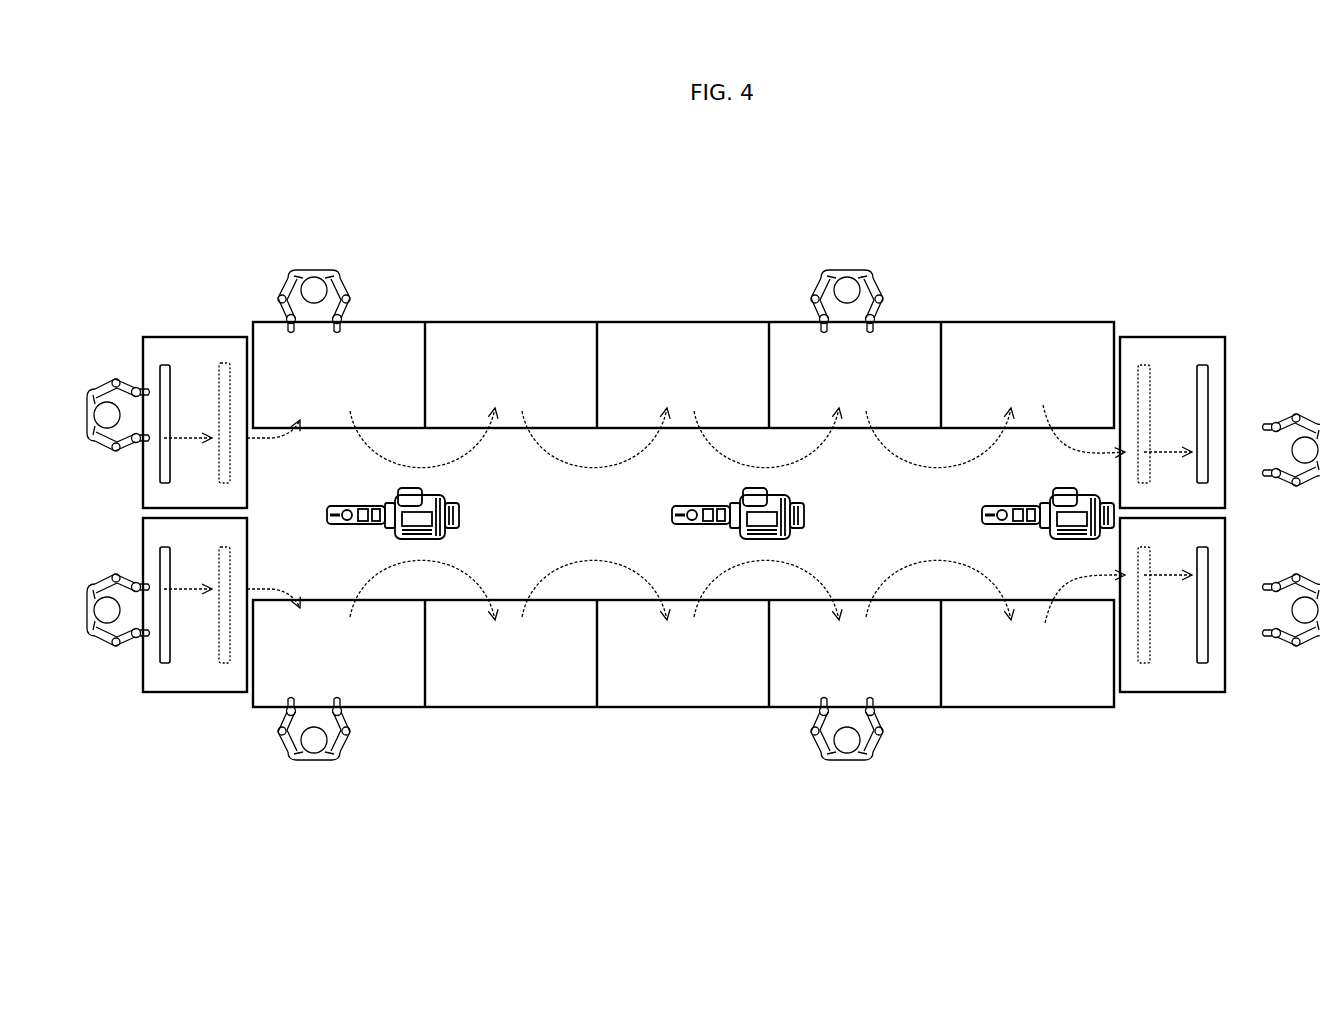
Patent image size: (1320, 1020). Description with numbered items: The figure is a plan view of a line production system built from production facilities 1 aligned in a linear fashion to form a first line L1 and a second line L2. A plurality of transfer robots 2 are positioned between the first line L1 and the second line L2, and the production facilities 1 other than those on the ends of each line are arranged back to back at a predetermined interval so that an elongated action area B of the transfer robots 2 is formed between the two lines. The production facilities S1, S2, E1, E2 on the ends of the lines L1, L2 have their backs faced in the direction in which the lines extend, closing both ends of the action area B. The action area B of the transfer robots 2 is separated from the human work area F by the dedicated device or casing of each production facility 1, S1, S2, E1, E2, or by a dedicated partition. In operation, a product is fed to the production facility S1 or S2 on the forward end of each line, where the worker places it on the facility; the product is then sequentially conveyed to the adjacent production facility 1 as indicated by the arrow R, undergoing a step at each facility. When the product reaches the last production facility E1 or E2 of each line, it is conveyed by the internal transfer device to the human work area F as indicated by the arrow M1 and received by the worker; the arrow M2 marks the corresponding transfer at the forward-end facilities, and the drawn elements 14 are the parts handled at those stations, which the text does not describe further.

The production facility 1 is at (915, 338).
The transfer robot 2 is at (326, 512).
The pallet (Pa: dashed position, Pw: work position) 14 is at (226, 363).
The first line L1 is at (990, 318).
The second line L2 is at (997, 715).
The production facility on the forward end of the first line S1 is at (150, 350).
The production facility on the forward end of the second line S2 is at (150, 675).
The last production facility of the first line E1 is at (1215, 347).
The last production facility of the second line E2 is at (1215, 678).
The arrow M1 is at (1168, 531).
The pallet movement direction at start stations M2 is at (188, 524).
The arrow R is at (686, 514).
The human work area F is at (672, 290).
The action area B is at (548, 529).